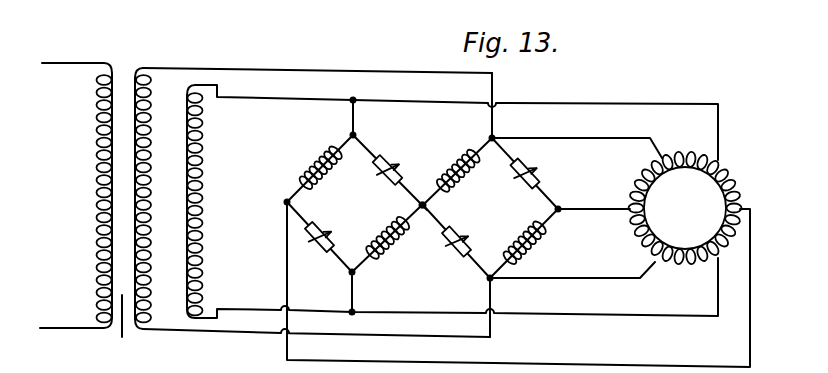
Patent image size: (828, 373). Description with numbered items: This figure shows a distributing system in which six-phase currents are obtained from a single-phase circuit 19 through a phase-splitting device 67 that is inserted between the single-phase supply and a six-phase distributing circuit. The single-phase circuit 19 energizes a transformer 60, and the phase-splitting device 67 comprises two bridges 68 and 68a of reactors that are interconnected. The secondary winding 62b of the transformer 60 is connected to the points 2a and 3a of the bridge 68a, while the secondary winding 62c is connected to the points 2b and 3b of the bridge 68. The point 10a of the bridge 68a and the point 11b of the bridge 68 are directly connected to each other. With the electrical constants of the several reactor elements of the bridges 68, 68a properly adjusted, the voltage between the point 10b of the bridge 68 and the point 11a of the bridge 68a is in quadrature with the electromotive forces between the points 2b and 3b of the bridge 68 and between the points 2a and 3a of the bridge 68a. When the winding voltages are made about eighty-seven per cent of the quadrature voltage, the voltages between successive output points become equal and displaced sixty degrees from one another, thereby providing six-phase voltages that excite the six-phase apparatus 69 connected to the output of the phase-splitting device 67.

The single-phase circuit 19 is at (77, 128).
The transformer 60 is at (120, 327).
The secondary winding 62b is at (150, 253).
The secondary winding 62c is at (200, 253).
The bridge 68 is at (354, 203).
The bridge 68a is at (490, 208).
The point of bridge 68 2b is at (353, 135).
The point of bridge 68 10b is at (287, 202).
The point of bridge 68 11b is at (422, 205).
The point of bridge 68 3b is at (352, 272).
The phase-splitting device 67 is at (427, 233).
The point of bridge 68a 2a is at (492, 138).
The point of bridge 68a 10a is at (432, 208).
The point of bridge 68a 11a is at (558, 209).
The point of bridge 68a 3a is at (490, 278).
The six-phase apparatus 69 is at (685, 207).